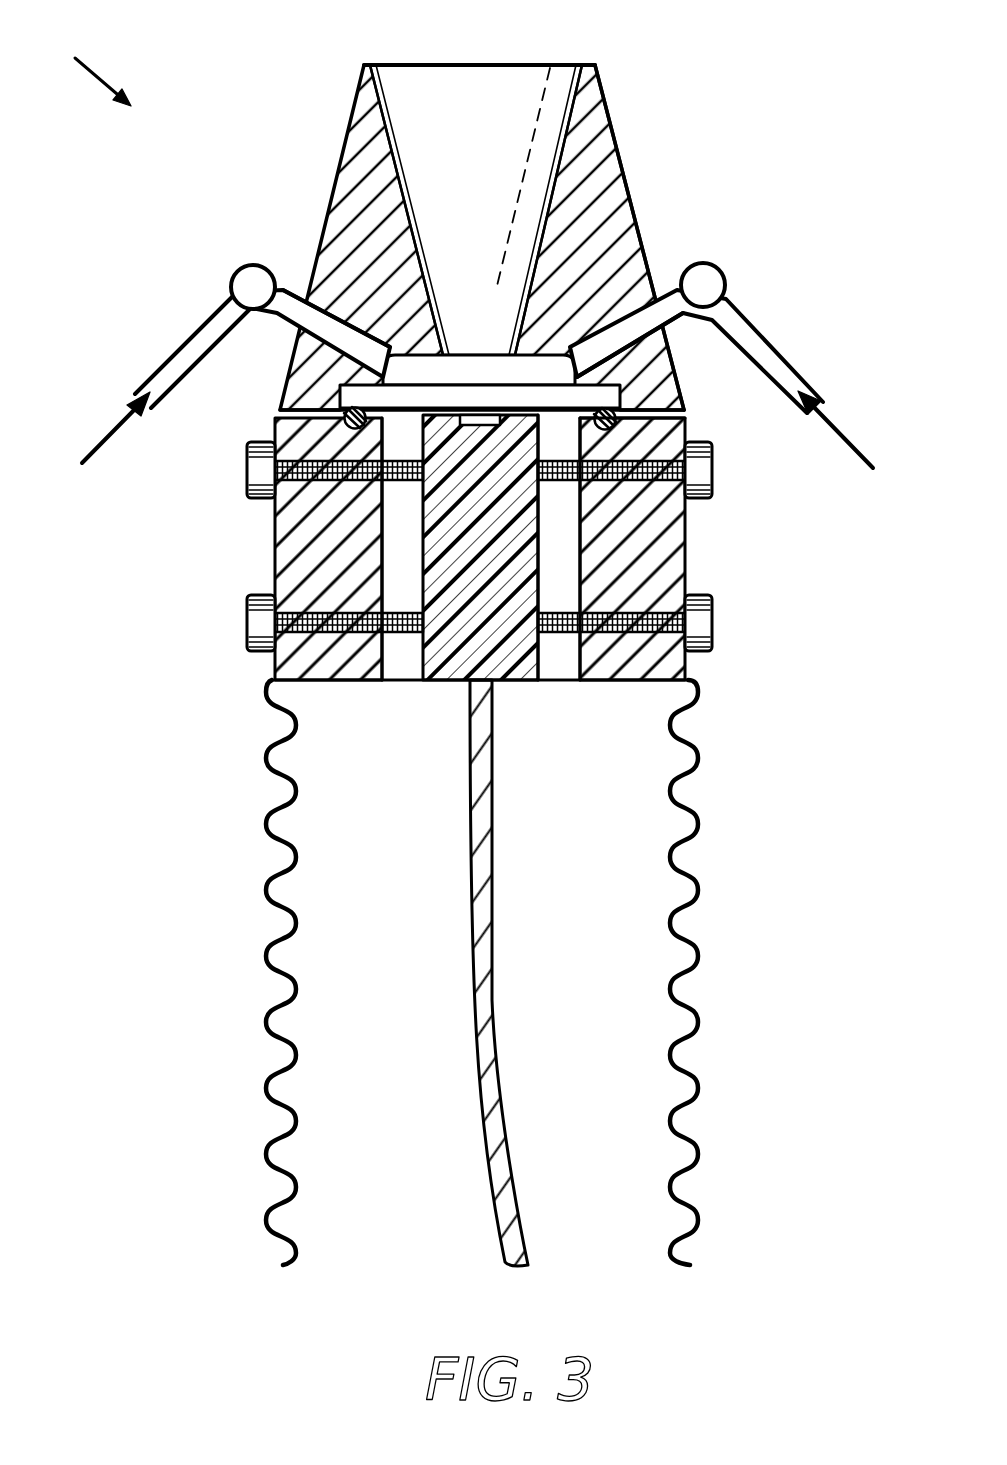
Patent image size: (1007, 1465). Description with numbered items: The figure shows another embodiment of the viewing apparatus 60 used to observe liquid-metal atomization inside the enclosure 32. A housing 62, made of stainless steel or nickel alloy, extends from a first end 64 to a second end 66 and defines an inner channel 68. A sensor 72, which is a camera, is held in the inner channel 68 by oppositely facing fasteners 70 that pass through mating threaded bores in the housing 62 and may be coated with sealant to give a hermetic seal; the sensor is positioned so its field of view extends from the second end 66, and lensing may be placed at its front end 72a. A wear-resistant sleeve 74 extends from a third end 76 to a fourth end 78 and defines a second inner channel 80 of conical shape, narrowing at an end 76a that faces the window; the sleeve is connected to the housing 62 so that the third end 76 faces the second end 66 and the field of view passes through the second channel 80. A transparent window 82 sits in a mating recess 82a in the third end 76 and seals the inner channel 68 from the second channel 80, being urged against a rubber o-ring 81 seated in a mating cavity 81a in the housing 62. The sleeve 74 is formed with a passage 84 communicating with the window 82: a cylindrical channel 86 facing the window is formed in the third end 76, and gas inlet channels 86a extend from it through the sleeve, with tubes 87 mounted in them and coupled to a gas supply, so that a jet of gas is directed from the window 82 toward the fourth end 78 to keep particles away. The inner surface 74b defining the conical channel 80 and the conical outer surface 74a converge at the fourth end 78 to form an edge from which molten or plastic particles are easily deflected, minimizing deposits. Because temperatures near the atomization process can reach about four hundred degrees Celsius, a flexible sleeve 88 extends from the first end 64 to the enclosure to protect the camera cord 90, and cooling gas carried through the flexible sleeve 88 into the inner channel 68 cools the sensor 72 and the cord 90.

The viewing apparatus 60 is at (88, 71).
The fourth end 78 is at (400, 64).
The sleeve 74 is at (601, 200).
The outer surface 74a is at (617, 146).
The inner surface 74b is at (383, 117).
The second inner channel 80 is at (491, 164).
The end of second channel 76a is at (496, 318).
The cylindrical channel 86 is at (500, 362).
The gas inlet channel 86a is at (300, 300).
The passage 84 is at (632, 335).
The tube 87 is at (196, 343).
The enclosure 32 is at (777, 349).
The transparent window 82 is at (347, 398).
The mating recess 82a is at (281, 406).
The third end 76 is at (340, 404).
The rubber o-ring 81 is at (630, 412).
The mating cavity 81a is at (608, 430).
The second end 66 is at (686, 418).
The housing 62 is at (688, 580).
The first end 64 is at (596, 684).
The inner channel 68 is at (563, 684).
The fasteners 70 is at (706, 500).
The sensor 72 is at (444, 681).
The front end 72a is at (482, 422).
The flexible sleeve 88 is at (701, 762).
The camera cord 90 is at (498, 992).